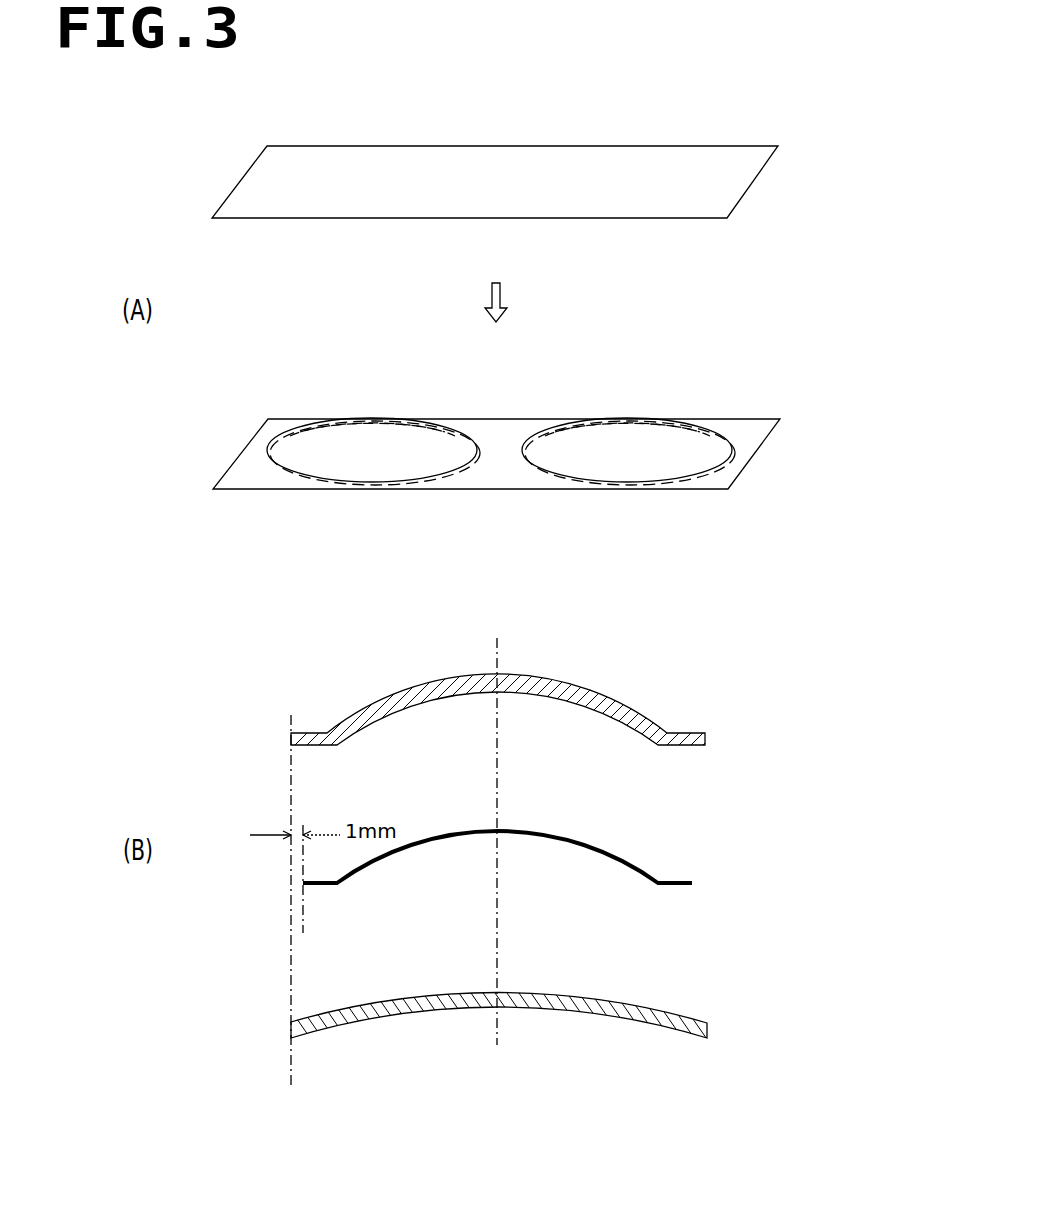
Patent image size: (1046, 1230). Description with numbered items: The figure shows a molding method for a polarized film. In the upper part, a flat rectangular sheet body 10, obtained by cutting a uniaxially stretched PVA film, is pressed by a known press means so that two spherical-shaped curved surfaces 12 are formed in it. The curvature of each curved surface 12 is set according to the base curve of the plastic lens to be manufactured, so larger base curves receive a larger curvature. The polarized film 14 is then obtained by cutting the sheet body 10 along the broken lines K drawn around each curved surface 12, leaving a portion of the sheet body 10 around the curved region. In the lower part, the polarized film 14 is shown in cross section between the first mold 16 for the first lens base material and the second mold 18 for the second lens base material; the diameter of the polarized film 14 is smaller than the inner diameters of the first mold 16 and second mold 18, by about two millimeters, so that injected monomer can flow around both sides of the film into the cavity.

The sheet body 10 is at (655, 158).
The curved surface 12 is at (366, 467).
The broken line K is at (480, 455).
The polarized film 14 is at (677, 882).
The first mold 16 is at (708, 737).
The second mold 18 is at (708, 1032).